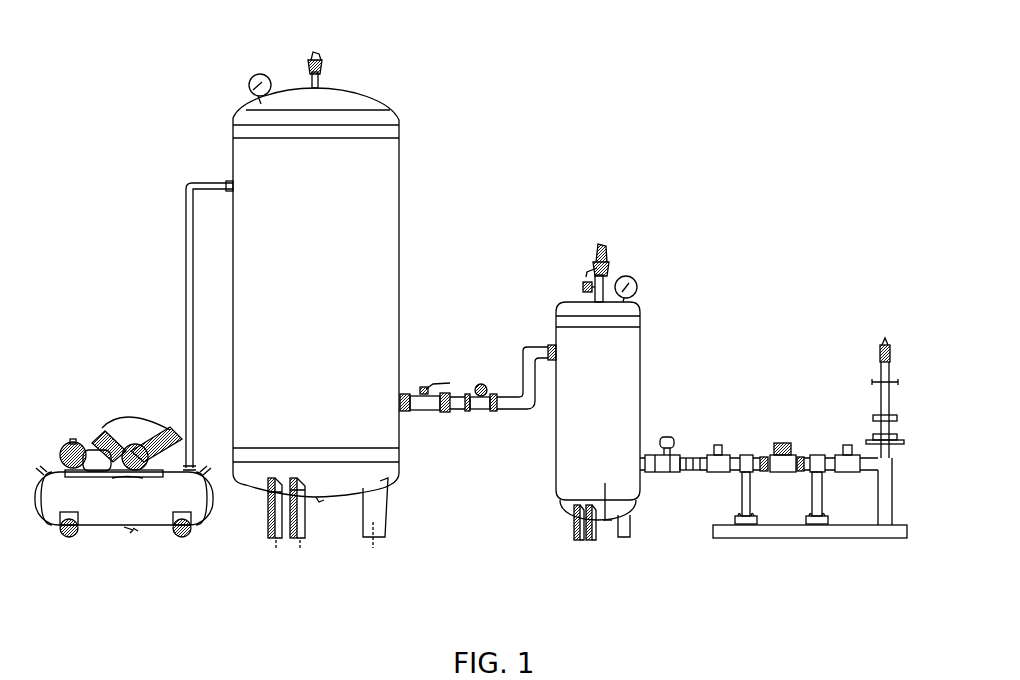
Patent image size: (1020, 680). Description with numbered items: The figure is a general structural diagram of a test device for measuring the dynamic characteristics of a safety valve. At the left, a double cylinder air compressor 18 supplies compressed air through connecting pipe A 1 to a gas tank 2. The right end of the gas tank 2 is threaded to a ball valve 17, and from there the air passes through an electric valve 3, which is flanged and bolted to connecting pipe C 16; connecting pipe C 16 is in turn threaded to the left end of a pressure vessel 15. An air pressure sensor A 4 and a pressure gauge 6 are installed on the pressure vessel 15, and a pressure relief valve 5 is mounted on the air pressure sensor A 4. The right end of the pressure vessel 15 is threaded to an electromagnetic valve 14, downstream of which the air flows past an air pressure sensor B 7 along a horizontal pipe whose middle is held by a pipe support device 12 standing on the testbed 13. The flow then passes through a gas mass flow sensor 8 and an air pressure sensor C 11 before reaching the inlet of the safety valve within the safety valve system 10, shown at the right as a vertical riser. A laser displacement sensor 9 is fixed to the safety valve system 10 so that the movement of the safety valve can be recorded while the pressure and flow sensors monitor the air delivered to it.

The connecting pipe A 1 is at (186, 183).
The gas tank 2 is at (302, 102).
The electric valve 3 is at (480, 385).
The air pressure sensor A 4 is at (583, 284).
The pressure relief valve 5 is at (597, 243).
The pressure gauge 6 is at (628, 276).
The air pressure sensor B 7 is at (718, 443).
The gas mass flow sensor 8 is at (782, 442).
The laser displacement sensor 9 is at (884, 343).
The safety valve system 10 is at (880, 524).
The air pressure sensor C 11 is at (850, 471).
The pipe support device 12 is at (747, 525).
The testbed 13 is at (735, 525).
The electromagnetic valve 14 is at (665, 455).
The pressure vessel 15 is at (607, 485).
The connecting pipe C 16 is at (523, 412).
The ball valve 17 is at (425, 410).
The double cylinder air compressor 18 is at (117, 507).